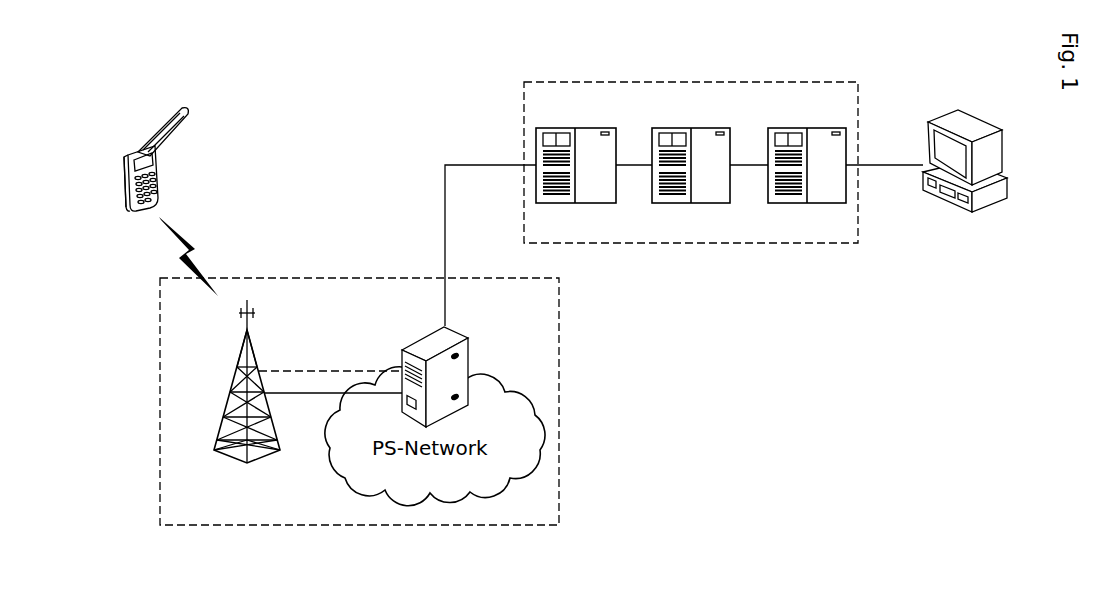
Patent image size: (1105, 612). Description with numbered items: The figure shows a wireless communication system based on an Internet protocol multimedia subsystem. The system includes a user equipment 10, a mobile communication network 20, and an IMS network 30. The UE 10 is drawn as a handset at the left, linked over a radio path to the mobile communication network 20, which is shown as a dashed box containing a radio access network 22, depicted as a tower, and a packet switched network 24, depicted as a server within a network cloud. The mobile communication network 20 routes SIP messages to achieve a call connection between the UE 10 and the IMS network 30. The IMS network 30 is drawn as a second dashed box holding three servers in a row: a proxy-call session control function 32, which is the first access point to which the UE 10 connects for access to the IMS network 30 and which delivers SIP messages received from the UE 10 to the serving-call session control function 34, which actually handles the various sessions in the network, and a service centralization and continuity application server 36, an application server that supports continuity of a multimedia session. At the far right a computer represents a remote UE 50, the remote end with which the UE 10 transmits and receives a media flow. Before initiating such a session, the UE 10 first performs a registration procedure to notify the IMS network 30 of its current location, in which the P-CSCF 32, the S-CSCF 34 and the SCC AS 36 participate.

The user equipment (UE) 10 is at (126, 170).
The mobile communication network 20 is at (320, 278).
The radio access network (RAN) 22 is at (232, 374).
The packet switched (PS)-network 24 is at (402, 346).
The IMS network 30 is at (825, 244).
The proxy-call session control function (P-CSCF) 32 is at (592, 128).
The serving-call session control function (S-CSCF) 34 is at (708, 128).
The service centralization and continuity application server (SCC AS) 36 is at (831, 128).
The remote UE (remote end) 50 is at (990, 207).